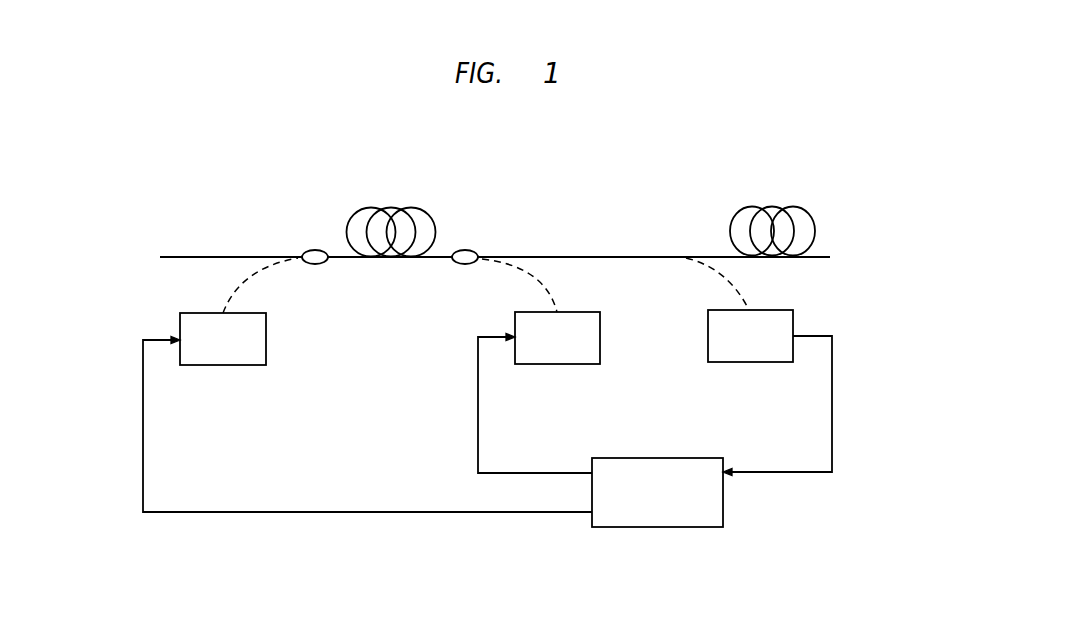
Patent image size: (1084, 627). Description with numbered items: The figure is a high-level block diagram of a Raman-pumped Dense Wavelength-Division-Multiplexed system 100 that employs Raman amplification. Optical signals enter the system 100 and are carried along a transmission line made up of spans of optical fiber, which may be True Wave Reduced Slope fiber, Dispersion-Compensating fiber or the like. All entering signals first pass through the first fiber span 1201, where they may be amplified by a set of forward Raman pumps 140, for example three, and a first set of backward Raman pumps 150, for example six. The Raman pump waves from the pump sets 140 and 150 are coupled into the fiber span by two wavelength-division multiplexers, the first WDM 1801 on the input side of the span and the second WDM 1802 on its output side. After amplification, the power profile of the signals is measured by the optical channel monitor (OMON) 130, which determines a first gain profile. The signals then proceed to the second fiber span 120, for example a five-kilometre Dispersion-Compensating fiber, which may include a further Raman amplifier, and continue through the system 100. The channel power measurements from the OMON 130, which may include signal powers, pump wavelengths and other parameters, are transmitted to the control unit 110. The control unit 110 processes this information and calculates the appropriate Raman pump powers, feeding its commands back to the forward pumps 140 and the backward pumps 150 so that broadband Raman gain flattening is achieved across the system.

The Raman-pumped DWDM system 100 is at (445, 609).
The control unit 110 is at (725, 463).
The second fiber span 120 is at (804, 206).
The first fiber span 1201 is at (420, 212).
The optical channel monitor (OMON) 130 is at (795, 323).
The forward Raman pumps 140 is at (268, 327).
The backward Raman pumps 150 is at (603, 326).
The first wavelength-division multiplexer (WDM) 1801 is at (304, 251).
The second wavelength-division multiplexer (WDM) 1802 is at (475, 250).